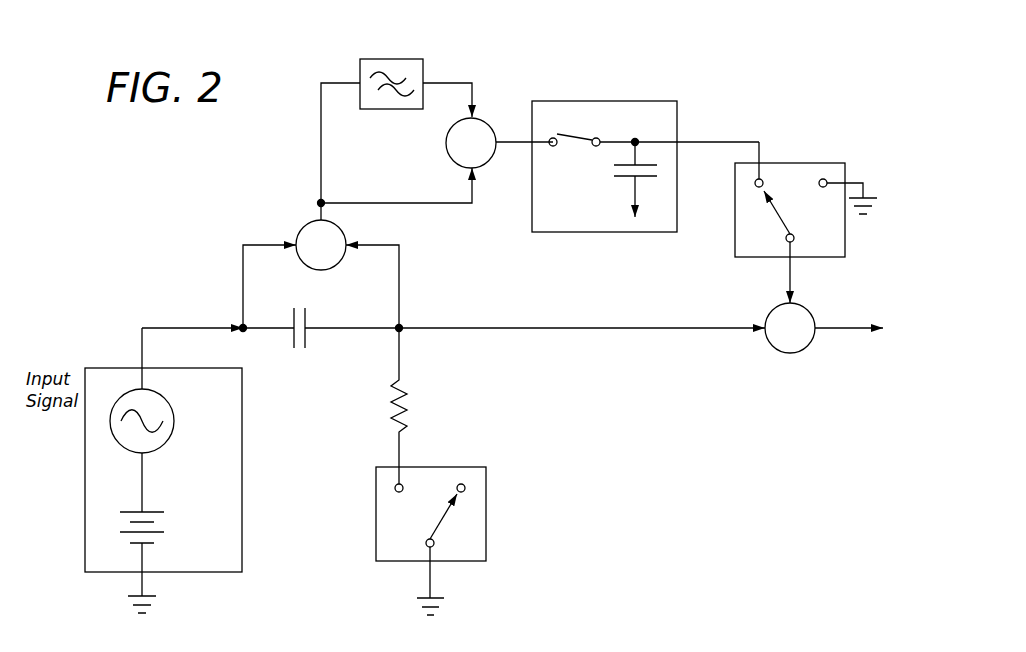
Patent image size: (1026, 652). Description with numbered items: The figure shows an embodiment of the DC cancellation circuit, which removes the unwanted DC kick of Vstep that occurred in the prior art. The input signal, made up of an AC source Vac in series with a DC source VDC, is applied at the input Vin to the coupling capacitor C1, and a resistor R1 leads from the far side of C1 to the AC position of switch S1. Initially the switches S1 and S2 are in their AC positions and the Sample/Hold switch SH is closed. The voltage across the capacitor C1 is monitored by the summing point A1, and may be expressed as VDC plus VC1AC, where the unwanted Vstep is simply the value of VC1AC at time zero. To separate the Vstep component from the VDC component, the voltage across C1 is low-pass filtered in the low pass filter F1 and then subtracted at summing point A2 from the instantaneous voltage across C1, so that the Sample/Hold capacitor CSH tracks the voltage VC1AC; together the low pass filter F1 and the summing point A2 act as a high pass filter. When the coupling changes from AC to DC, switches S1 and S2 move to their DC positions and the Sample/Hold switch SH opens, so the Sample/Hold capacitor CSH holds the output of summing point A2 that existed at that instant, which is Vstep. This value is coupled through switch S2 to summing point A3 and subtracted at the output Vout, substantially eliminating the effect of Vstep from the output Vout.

The AC component of input signal Vac is at (163, 450).
The DC component of input signal VDC is at (170, 533).
The input voltage Vin is at (203, 343).
The coupling capacitor C1 is at (321, 335).
The summing point A1 is at (321, 265).
The low pass filter F1 is at (395, 118).
The summing point A2 is at (421, 148).
The Sample/Hold switch SH is at (627, 170).
The Sample/Hold capacitor CSH is at (619, 178).
The switch S2 is at (792, 193).
The summing point A3 is at (783, 297).
The output Vout is at (849, 347).
The resistor R1 is at (415, 406).
The switch S1 is at (428, 541).